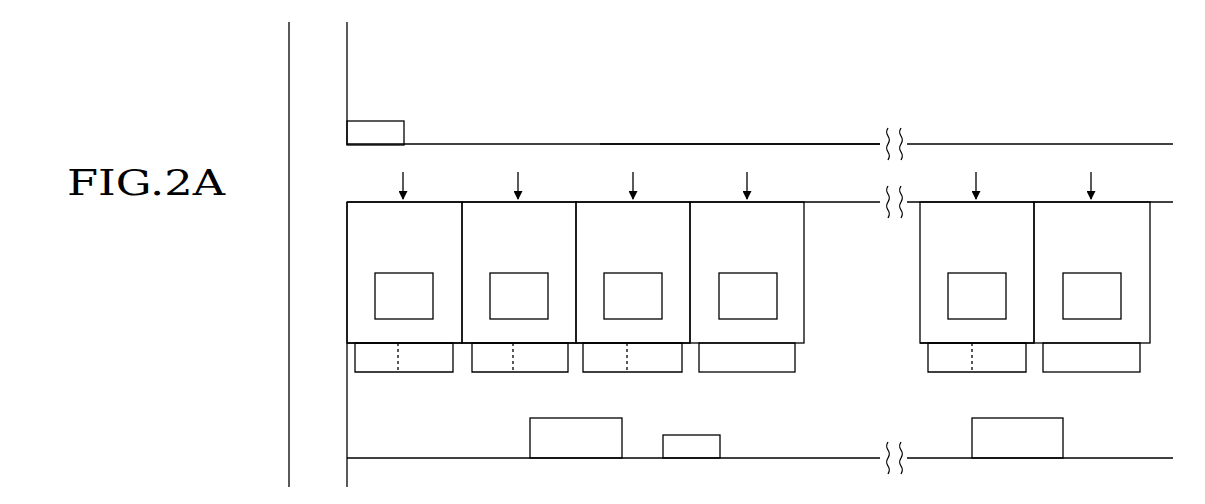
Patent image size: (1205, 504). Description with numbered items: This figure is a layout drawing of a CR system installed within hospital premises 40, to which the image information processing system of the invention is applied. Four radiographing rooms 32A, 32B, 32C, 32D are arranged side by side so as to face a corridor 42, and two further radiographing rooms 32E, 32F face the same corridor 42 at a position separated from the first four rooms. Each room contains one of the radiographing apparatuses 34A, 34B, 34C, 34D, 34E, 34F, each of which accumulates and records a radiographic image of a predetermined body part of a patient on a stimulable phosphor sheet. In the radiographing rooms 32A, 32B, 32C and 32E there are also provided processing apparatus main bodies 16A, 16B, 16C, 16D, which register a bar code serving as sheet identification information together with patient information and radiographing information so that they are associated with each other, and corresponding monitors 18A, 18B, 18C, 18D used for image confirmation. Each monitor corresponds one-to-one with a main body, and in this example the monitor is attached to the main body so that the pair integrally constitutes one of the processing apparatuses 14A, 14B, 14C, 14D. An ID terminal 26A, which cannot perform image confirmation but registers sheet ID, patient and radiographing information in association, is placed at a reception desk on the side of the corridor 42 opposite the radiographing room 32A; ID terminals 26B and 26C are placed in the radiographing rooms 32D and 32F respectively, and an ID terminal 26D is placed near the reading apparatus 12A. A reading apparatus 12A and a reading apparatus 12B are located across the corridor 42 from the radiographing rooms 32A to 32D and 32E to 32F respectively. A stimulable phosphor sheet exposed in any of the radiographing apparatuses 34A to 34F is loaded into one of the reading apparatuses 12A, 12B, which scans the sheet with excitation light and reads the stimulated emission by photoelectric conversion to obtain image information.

The hospital premises 40 is at (752, 82).
The corridor 42 is at (838, 158).
The ID terminal 26A is at (376, 120).
The ID terminal 26B is at (747, 373).
The ID terminal 26C is at (1096, 373).
The ID terminal 26D is at (722, 446).
The radiographing room 32A is at (404, 257).
The radiographing room 32B is at (519, 257).
The radiographing room 32C is at (633, 257).
The radiographing room 32D is at (747, 257).
The radiographing room 32E is at (977, 257).
The radiographing room 32F is at (1092, 257).
The radiographing apparatus 34A is at (390, 272).
The radiographing apparatus 34B is at (505, 272).
The radiographing apparatus 34C is at (616, 272).
The radiographing apparatus 34D is at (731, 272).
The radiographing apparatus 34E is at (960, 272).
The radiographing apparatus 34F is at (1075, 272).
The processing apparatus main body 16A is at (382, 373).
The processing apparatus main body 16B is at (497, 373).
The processing apparatus main body 16C is at (611, 373).
The processing apparatus main body 16D is at (956, 373).
The monitor 18A is at (427, 373).
The monitor 18B is at (542, 373).
The monitor 18C is at (656, 373).
The monitor 18D is at (1000, 373).
The processing apparatus 14A is at (406, 406).
The processing apparatus 14B is at (518, 406).
The processing apparatus 14C is at (634, 410).
The processing apparatus 14D is at (967, 408).
The reading apparatus 12A is at (577, 461).
The reading apparatus 12B is at (1022, 461).